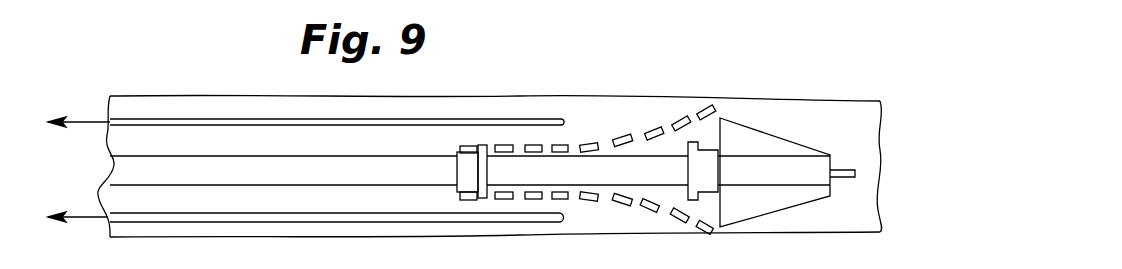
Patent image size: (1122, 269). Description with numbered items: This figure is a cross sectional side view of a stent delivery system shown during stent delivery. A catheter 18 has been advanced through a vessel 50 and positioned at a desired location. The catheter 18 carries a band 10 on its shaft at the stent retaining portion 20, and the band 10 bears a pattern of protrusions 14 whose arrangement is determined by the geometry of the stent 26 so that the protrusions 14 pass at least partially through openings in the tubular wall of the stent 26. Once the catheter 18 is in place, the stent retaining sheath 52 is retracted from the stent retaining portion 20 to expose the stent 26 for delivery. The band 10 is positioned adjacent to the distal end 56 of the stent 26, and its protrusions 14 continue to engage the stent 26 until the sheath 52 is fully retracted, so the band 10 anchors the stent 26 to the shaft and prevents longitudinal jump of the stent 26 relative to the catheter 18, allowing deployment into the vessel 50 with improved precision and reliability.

The band 10 is at (458, 152).
The protrusions 14 is at (491, 142).
The catheter 18 is at (480, 94).
The stent retaining portion 20 is at (638, 173).
The stent 26 is at (563, 146).
The vessel 50 is at (800, 122).
The stent retaining sheath 52 is at (415, 221).
The distal end 56 is at (470, 200).